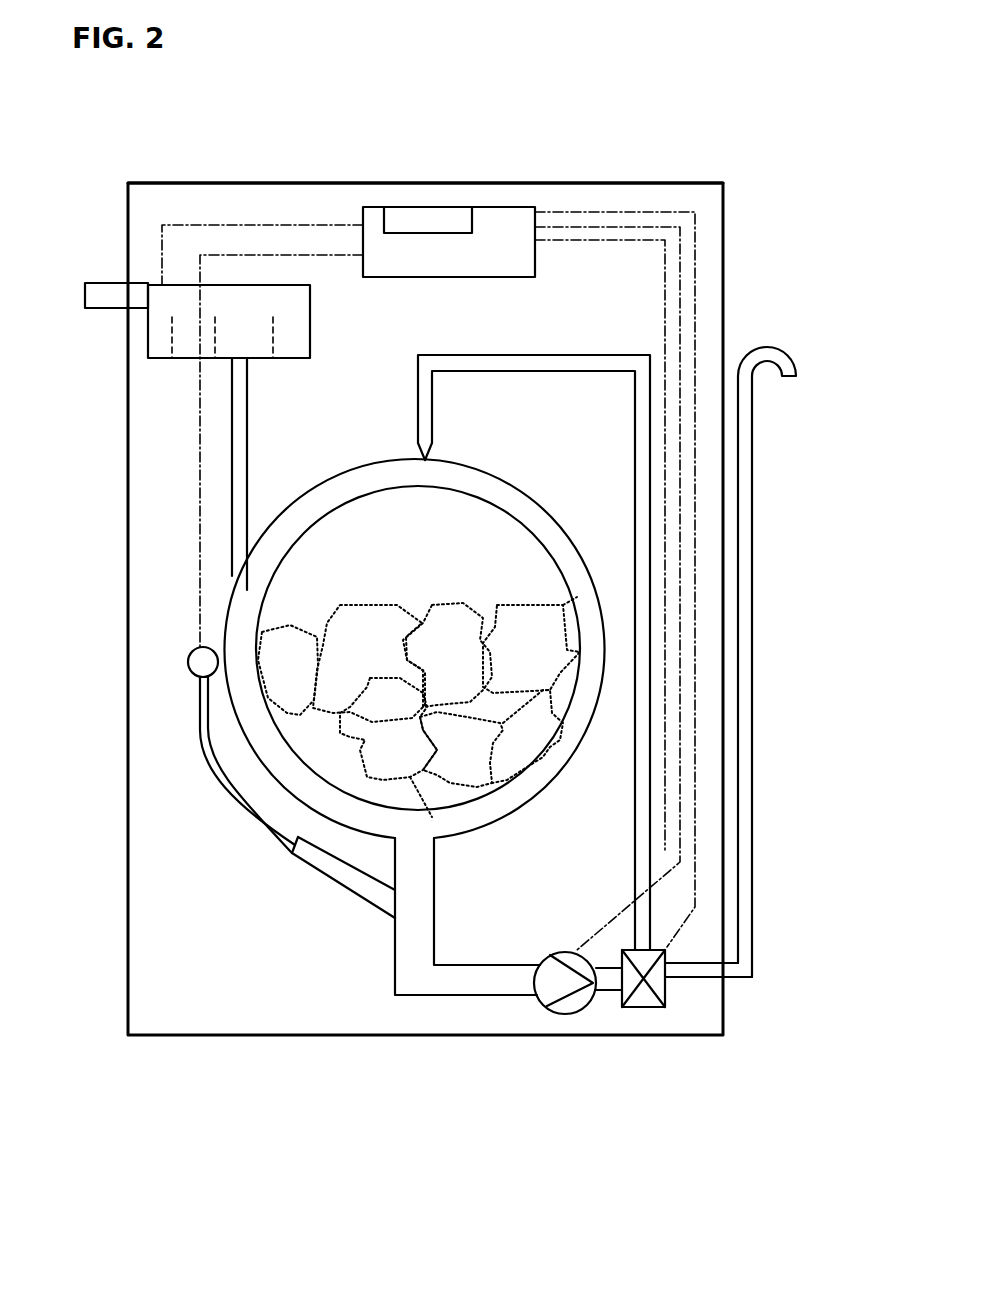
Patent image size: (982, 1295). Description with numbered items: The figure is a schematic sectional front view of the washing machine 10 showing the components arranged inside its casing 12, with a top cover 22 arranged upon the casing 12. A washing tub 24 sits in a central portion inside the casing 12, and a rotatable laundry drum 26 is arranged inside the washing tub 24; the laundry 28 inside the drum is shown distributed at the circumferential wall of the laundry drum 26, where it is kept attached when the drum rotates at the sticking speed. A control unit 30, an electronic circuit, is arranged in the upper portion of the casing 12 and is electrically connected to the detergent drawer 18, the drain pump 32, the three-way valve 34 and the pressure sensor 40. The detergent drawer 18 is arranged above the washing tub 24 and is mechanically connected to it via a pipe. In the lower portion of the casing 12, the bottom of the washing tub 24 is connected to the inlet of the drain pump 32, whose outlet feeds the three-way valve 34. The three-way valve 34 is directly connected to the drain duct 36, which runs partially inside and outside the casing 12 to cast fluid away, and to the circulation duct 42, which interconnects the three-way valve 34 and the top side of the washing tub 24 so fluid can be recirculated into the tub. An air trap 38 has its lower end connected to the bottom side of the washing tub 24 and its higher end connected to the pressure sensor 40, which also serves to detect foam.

The washing machine 10 is at (594, 134).
The casing 12 is at (723, 205).
The detergent drawer 18 is at (160, 330).
The top cover 22 is at (238, 183).
The washing tub 24 is at (612, 680).
The laundry drum 26 is at (297, 538).
The laundry 28 is at (367, 730).
The control unit 30 is at (503, 252).
The drain pump 32 is at (557, 990).
The three-way valve 34 is at (643, 1000).
The drain duct 36 is at (743, 433).
The air trap 38 is at (335, 865).
The pressure sensor 40 is at (188, 662).
The circulation duct 42 is at (642, 558).